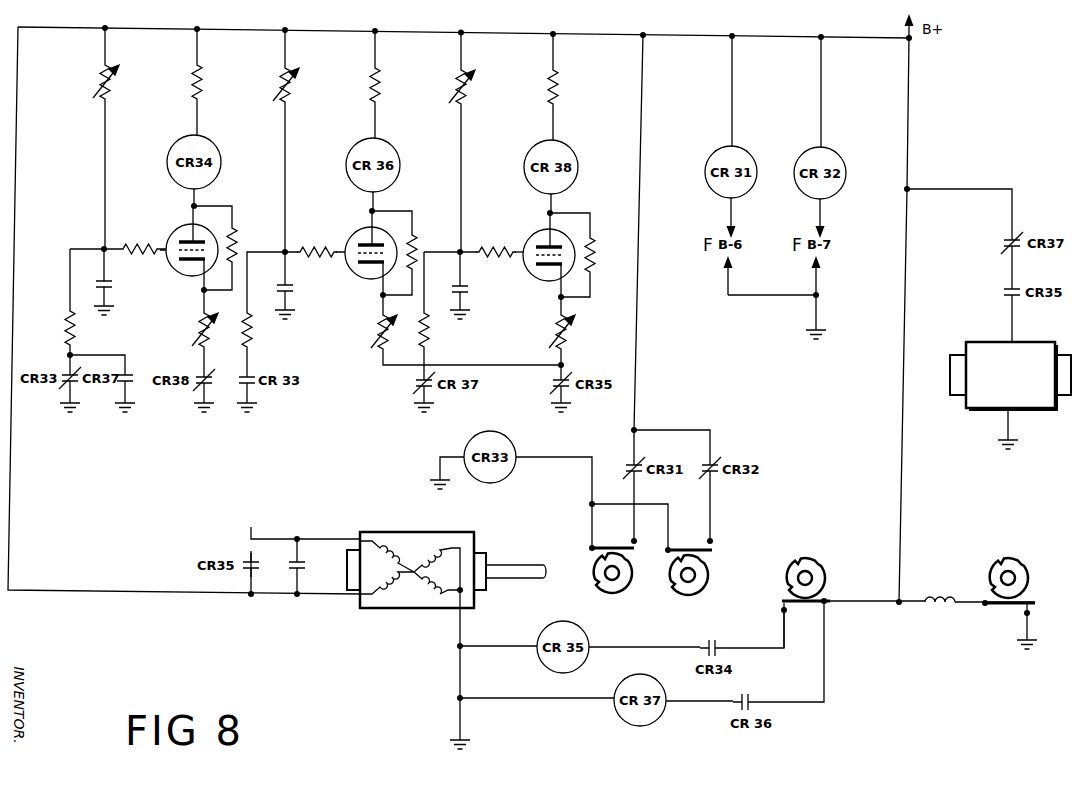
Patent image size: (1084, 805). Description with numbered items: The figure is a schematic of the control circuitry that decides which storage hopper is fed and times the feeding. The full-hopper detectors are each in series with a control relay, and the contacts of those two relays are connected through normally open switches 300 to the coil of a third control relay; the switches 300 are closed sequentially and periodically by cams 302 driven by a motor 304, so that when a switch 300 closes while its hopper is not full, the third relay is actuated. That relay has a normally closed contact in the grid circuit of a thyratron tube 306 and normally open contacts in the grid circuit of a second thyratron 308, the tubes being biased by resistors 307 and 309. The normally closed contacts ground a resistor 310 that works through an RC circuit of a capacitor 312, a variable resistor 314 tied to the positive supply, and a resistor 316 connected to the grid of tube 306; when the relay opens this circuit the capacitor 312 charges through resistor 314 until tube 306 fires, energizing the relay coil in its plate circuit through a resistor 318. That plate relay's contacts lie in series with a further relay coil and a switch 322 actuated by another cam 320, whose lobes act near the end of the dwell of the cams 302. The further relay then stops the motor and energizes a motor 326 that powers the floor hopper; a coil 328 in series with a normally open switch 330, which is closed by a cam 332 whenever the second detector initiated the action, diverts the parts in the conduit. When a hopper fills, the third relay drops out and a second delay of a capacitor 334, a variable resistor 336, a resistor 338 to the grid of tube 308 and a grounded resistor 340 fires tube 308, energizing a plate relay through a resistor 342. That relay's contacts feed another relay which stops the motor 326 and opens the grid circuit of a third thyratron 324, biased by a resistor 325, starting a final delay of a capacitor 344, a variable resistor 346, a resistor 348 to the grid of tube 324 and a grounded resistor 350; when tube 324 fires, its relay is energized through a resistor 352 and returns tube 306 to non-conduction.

The normally open switches 300 is at (587, 549).
The cams 302 is at (594, 592).
The motor 304 is at (398, 531).
The thyratron tube 306 is at (178, 232).
The resistor 307 is at (242, 240).
The thyratron 308 is at (357, 234).
The resistor 309 is at (420, 246).
The resistor 310 is at (62, 330).
The capacitor 312 is at (116, 285).
The variable resistor 314 is at (119, 87).
The resistor 316 is at (132, 247).
The resistor 318 is at (206, 87).
The cam 320 is at (826, 576).
The switch 322 is at (782, 611).
The thyratron 324 is at (540, 236).
The resistor 325 is at (600, 248).
The motor 326 is at (1010, 342).
The coil 328 is at (942, 598).
The normally open switch 330 is at (984, 606).
The cam 332 is at (1030, 576).
The capacitor 334 is at (288, 289).
The variable resistor 336 is at (296, 89).
The resistor 338 is at (307, 247).
The resistor 340 is at (253, 342).
The resistor 342 is at (384, 90).
The capacitor 344 is at (467, 292).
The variable resistor 346 is at (474, 89).
The resistor 348 is at (490, 247).
The resistor 350 is at (432, 337).
The resistor 352 is at (563, 90).